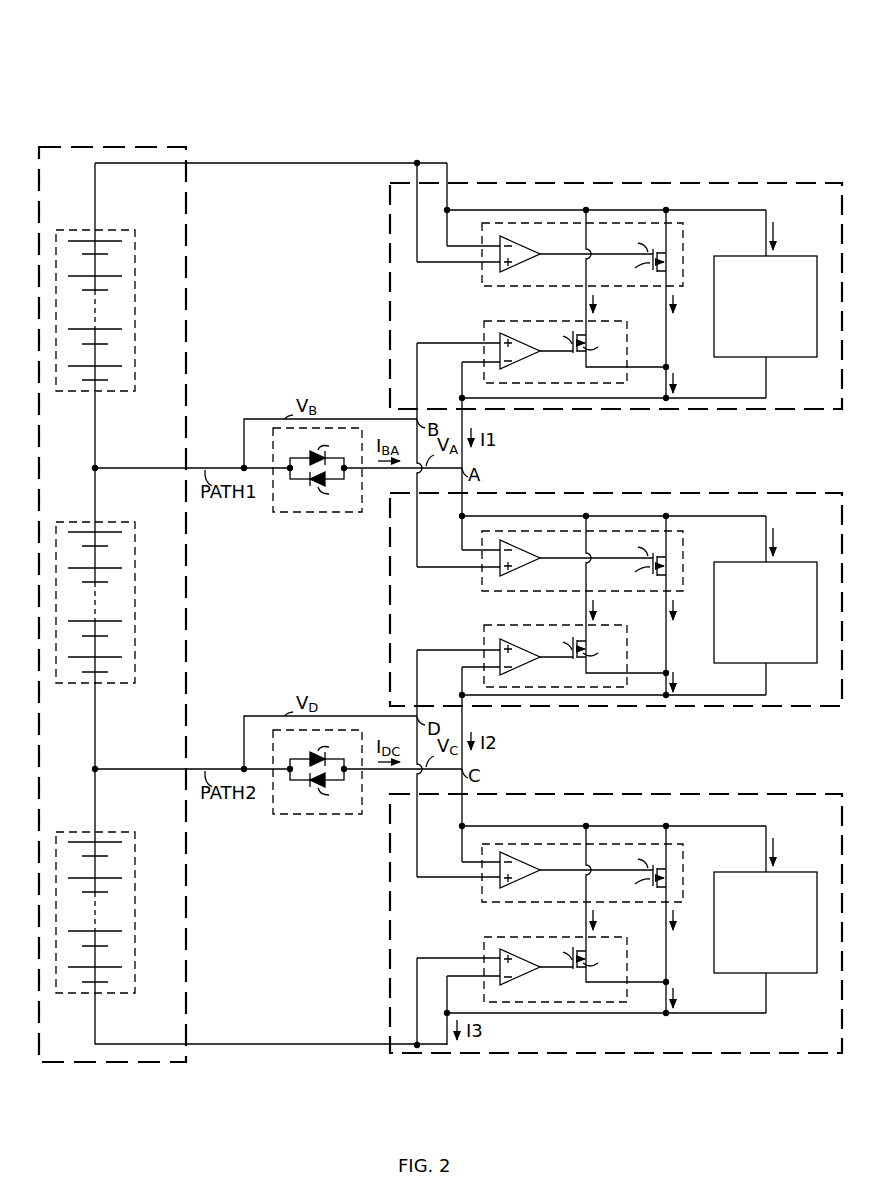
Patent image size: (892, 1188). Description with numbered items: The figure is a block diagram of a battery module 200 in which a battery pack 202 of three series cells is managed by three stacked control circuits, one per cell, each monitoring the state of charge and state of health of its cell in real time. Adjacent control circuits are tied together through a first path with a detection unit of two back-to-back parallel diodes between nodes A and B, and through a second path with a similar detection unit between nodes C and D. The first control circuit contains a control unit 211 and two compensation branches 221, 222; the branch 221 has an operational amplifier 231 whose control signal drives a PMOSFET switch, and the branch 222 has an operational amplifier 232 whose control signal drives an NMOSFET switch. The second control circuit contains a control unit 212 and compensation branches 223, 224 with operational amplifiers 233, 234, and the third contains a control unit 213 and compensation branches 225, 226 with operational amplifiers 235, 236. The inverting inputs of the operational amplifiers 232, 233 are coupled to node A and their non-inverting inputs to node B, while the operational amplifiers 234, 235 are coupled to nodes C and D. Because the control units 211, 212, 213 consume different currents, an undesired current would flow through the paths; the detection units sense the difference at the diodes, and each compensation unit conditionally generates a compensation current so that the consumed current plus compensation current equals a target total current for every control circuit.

The battery module 200 is at (118, 98).
The battery pack 202 is at (140, 147).
The control unit 211 is at (752, 336).
The control unit 212 is at (752, 642).
The control unit 213 is at (752, 952).
The compensation branch 221 is at (685, 254).
The compensation branch 222 is at (620, 360).
The compensation branch 223 is at (685, 560).
The compensation branch 224 is at (620, 666).
The compensation branch 225 is at (685, 872).
The compensation branch 226 is at (620, 978).
The operational amplifier 231 is at (522, 266).
The operational amplifier 232 is at (522, 363).
The operational amplifier 233 is at (522, 570).
The operational amplifier 234 is at (522, 669).
The operational amplifier 235 is at (522, 882).
The operational amplifier 236 is at (522, 979).